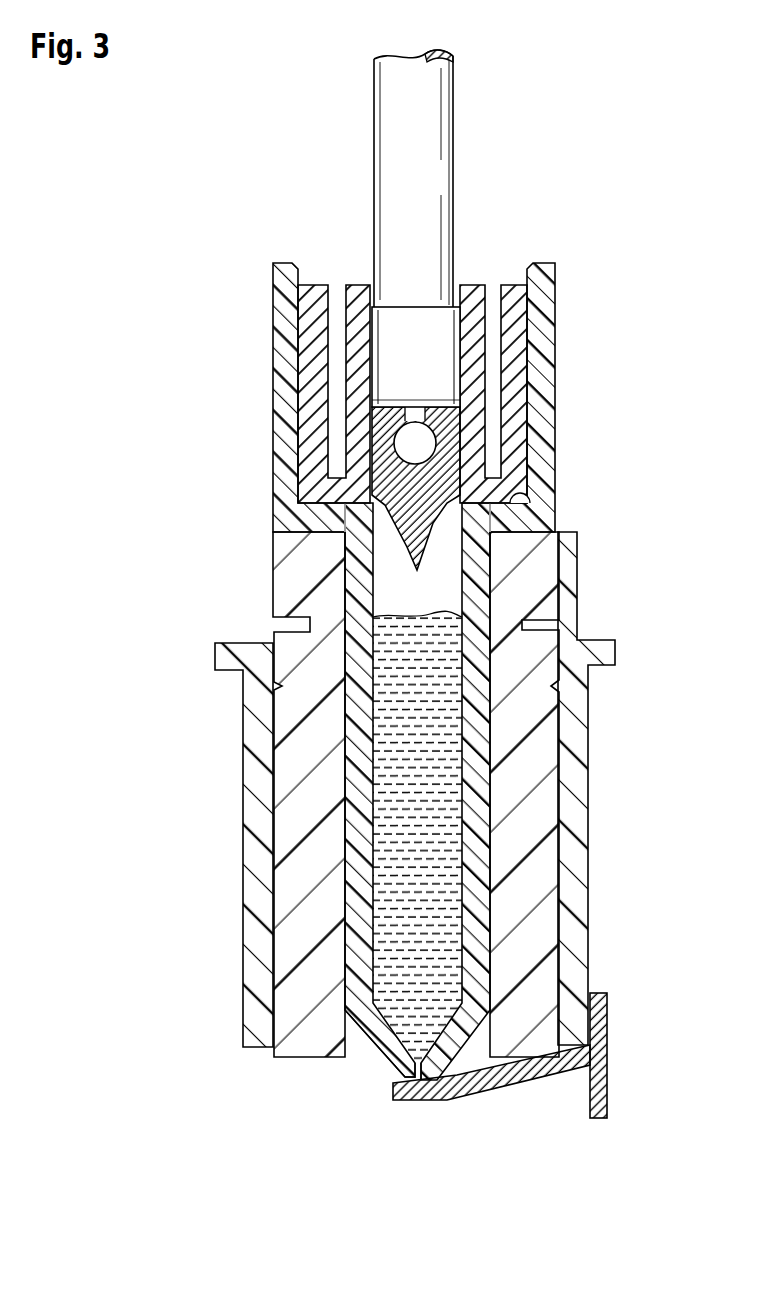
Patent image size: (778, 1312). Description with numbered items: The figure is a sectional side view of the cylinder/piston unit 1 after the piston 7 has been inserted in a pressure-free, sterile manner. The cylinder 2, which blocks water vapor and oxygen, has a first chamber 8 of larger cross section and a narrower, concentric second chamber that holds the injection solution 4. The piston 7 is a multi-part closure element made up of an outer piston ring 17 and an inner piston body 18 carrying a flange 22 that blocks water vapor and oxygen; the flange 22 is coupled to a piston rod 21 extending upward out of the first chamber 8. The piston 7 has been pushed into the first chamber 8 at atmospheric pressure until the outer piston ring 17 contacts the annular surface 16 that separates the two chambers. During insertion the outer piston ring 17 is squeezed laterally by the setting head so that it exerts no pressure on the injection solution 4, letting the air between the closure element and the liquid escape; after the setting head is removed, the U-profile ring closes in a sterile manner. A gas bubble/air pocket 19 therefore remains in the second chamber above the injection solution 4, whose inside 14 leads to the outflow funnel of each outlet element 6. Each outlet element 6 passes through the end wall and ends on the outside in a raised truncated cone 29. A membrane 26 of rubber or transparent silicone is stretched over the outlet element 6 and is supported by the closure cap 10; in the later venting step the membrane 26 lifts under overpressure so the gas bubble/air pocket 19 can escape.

The cylinder/piston unit 1 is at (186, 203).
The cylinder 2 is at (283, 353).
The injection solution 4 is at (397, 703).
The outlet element 6 is at (400, 1077).
The piston 7 is at (388, 327).
The first chamber 8 is at (513, 241).
The closure cap 10 is at (572, 874).
The inside 14 is at (440, 810).
The annular surface 16 is at (512, 496).
The outer piston ring 17 is at (515, 372).
The inner piston body 18 is at (382, 432).
The gas bubble/air pocket 19 is at (437, 580).
The piston rod 21 is at (395, 131).
The flange 22 is at (430, 350).
The membrane 26 is at (510, 1085).
The raised truncated cone 29 is at (397, 1066).